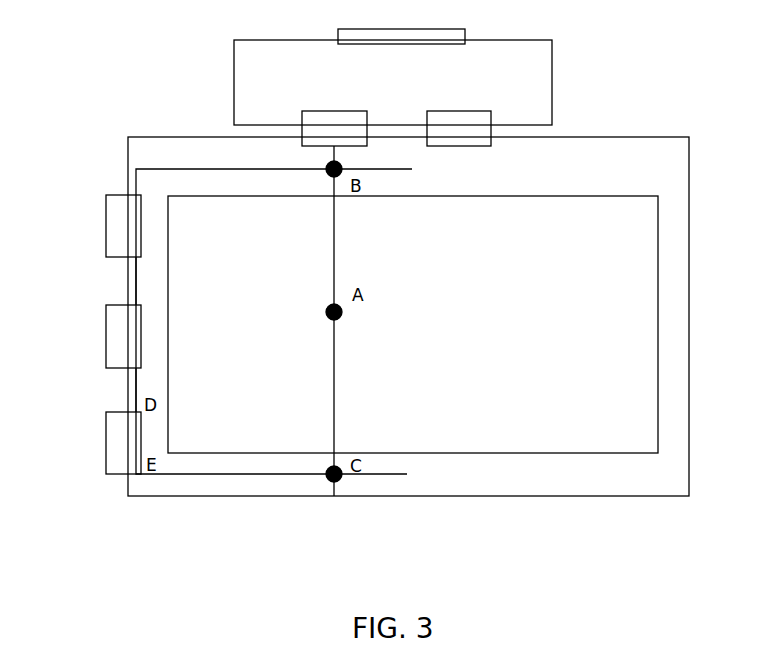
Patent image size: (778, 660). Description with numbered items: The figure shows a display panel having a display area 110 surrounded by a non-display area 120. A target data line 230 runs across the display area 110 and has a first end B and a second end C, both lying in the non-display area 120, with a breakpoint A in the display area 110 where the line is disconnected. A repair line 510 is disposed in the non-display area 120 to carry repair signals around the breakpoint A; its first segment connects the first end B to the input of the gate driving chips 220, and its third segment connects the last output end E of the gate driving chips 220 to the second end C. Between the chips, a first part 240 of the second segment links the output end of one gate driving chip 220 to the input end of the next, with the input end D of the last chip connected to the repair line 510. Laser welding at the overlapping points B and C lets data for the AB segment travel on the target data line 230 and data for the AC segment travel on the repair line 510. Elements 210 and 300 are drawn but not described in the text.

The display area 110 is at (660, 306).
The non-display area 120 is at (677, 152).
The connector 210 is at (302, 111).
The gate driving chips 220 is at (108, 226).
The target data line 230 is at (335, 407).
The first part 240 is at (135, 290).
The external device 300 is at (525, 40).
The repair line 510 is at (152, 168).